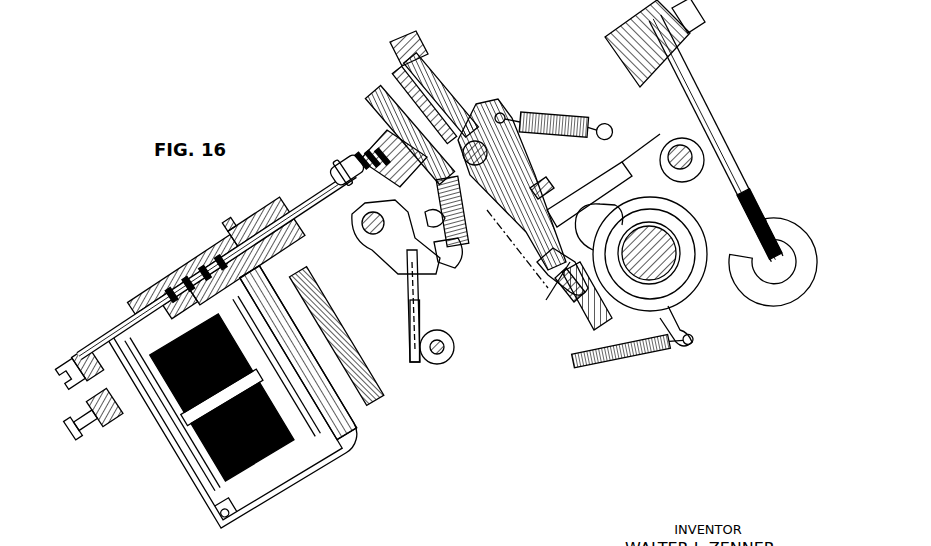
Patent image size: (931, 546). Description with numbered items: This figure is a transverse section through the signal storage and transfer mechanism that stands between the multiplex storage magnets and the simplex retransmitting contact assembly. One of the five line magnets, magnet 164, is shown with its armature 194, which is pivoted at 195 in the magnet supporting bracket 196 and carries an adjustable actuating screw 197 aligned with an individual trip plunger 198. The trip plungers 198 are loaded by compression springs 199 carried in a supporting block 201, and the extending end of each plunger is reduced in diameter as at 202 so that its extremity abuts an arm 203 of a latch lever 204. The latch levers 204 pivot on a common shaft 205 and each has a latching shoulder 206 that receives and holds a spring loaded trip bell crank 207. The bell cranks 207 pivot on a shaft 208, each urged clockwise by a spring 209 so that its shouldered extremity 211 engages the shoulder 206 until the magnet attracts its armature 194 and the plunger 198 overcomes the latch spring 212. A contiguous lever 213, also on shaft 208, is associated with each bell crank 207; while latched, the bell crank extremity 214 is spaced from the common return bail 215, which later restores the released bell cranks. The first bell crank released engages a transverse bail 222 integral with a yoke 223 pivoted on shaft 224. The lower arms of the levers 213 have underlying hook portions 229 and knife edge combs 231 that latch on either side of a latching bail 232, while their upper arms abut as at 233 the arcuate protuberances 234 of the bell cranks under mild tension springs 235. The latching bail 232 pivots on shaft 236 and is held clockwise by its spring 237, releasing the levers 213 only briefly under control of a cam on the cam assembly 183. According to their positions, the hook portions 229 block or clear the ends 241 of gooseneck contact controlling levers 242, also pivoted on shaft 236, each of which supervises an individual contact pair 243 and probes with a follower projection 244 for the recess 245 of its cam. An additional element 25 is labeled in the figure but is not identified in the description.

The ratchet wheel 25 is at (622, 302).
The line magnet 164 is at (170, 400).
The cam assembly 183 is at (707, 277).
The armature 194 is at (118, 420).
The pivot 195 is at (233, 512).
The magnet supporting bracket 196 is at (322, 458).
The adjustable actuating screw 197 is at (70, 372).
The trip plunger 198 is at (150, 293).
The compression spring 199 is at (190, 255).
The supporting block 201 is at (256, 228).
The reduced diameter end 202 is at (313, 204).
The arm 203 is at (338, 160).
The latch lever 204 is at (374, 237).
The common shaft 205 is at (392, 220).
The latching shoulder 206 is at (421, 285).
The trip bell crank 207 is at (460, 224).
The shaft 208 is at (477, 141).
The spring 209 is at (554, 113).
The shouldered extremity 211 is at (450, 260).
The latch spring 212 is at (370, 152).
The lever 213 is at (522, 198).
The extremity 214 is at (372, 93).
The common bail 215 is at (414, 57).
The transverse bail 222 is at (437, 208).
The yoke 223 is at (421, 366).
The shaft 224 is at (455, 347).
The hook portion 229 is at (626, 253).
The knife edge comb 231 is at (545, 274).
The latching bail 232 is at (556, 280).
The offset arm 233 is at (447, 78).
The arcuate protuberance 234 is at (398, 74).
The tension spring 235 is at (556, 195).
The shaft 236 is at (676, 146).
The spring 237 is at (642, 353).
The end 241 is at (506, 250).
The gooseneck contact controlling lever 242 is at (778, 305).
The contact pair 243 is at (764, 205).
The follower projection 244 is at (620, 190).
The recess 245 is at (598, 227).